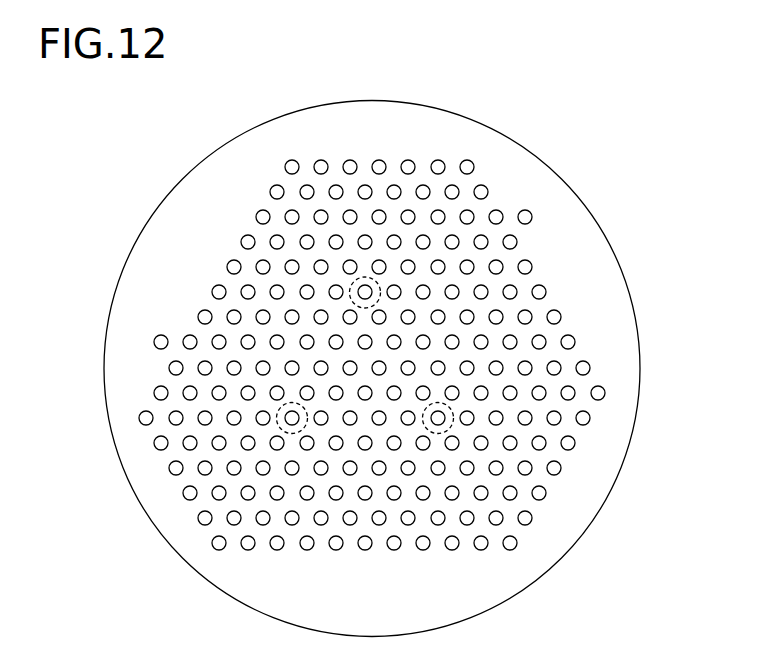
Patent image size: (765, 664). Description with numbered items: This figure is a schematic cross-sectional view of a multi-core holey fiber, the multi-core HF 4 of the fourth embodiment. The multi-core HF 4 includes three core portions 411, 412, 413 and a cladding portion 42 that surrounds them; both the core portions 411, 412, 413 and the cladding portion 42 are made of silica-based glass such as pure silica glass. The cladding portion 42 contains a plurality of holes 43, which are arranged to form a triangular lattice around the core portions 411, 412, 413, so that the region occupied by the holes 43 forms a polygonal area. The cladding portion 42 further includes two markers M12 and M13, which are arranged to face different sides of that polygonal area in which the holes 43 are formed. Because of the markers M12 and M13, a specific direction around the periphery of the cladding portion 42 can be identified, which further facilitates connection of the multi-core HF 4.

The multi-core HF 4 is at (605, 148).
The cladding portion 42 is at (602, 482).
The holes 43 is at (605, 393).
The core portion 411 is at (365, 277).
The core portion 412 is at (449, 406).
The core portion 413 is at (277, 413).
The marker M12 is at (532, 205).
The marker M13 is at (158, 330).